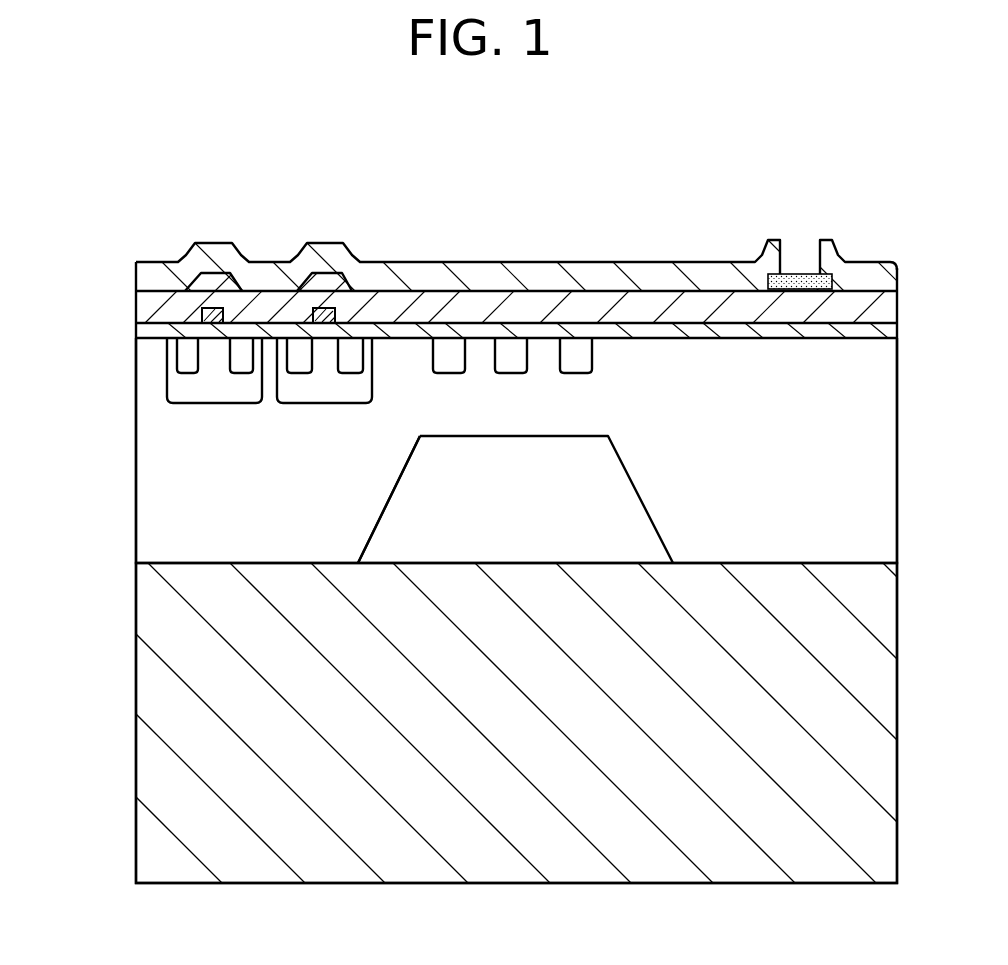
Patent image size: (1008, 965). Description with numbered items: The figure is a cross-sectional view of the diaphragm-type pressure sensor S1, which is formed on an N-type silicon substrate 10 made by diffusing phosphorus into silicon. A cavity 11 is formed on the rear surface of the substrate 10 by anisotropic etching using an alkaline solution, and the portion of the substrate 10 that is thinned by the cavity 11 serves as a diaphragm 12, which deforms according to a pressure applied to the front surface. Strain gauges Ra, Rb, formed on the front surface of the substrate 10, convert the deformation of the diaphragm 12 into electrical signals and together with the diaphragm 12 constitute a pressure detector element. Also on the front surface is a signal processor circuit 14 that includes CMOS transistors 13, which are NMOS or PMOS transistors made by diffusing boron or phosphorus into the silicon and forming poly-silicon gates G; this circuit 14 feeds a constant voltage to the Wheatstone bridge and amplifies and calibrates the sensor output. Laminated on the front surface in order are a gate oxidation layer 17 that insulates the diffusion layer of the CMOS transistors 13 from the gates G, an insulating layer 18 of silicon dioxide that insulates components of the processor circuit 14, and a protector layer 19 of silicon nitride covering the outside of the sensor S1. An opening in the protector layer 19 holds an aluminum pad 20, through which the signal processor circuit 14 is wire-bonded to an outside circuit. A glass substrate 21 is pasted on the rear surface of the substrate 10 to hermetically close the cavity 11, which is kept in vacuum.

The diaphragm-type pressure sensor S1 is at (112, 233).
The silicon substrate 10 is at (136, 420).
The cavity 11 is at (384, 510).
The diaphragm 12 is at (562, 403).
The CMOS transistors 13 is at (355, 226).
The signal processor circuit 14 is at (269, 291).
The gate oxidation layer 17 is at (146, 332).
The insulating layer 18 is at (136, 306).
The protector layer 19 is at (136, 276).
The pad 20 is at (800, 273).
The glass substrate 21 is at (156, 704).
The gates G is at (200, 314).
The strain gauge Ra is at (433, 352).
The strain gauge Rb is at (495, 352).